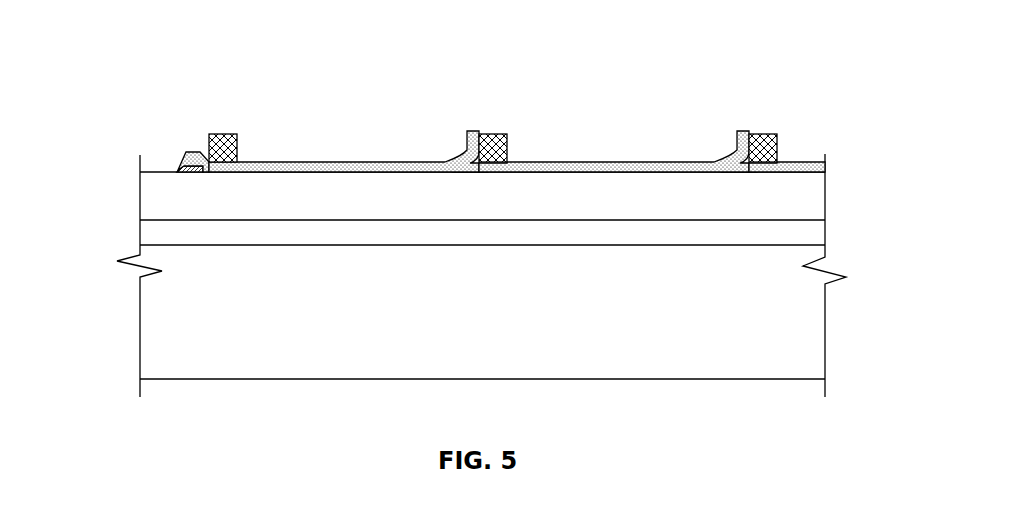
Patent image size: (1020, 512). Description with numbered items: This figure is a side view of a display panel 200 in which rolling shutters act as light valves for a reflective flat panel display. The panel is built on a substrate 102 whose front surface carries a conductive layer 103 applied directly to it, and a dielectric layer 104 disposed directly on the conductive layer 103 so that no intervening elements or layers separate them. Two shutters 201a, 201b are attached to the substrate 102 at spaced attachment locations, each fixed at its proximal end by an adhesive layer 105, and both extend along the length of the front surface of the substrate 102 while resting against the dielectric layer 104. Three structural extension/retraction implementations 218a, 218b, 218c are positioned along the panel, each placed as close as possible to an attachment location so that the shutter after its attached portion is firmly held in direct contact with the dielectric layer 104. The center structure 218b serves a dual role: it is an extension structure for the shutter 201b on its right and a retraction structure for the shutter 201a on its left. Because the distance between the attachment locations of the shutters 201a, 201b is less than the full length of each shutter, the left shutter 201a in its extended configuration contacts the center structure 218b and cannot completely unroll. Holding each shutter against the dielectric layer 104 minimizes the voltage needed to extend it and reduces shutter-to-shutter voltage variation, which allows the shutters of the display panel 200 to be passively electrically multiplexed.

The display panel 200 is at (108, 108).
The substrate 102 is at (802, 340).
The conductive layer 103 is at (802, 235).
The dielectric layer 104 is at (802, 193).
The adhesive layer 105 is at (183, 165).
The shutter 201a is at (312, 160).
The shutter 201b is at (645, 160).
The structural extension/retraction implementation 218a is at (225, 132).
The center structure 218b is at (502, 132).
The structural extension/retraction implementation 218c is at (768, 132).